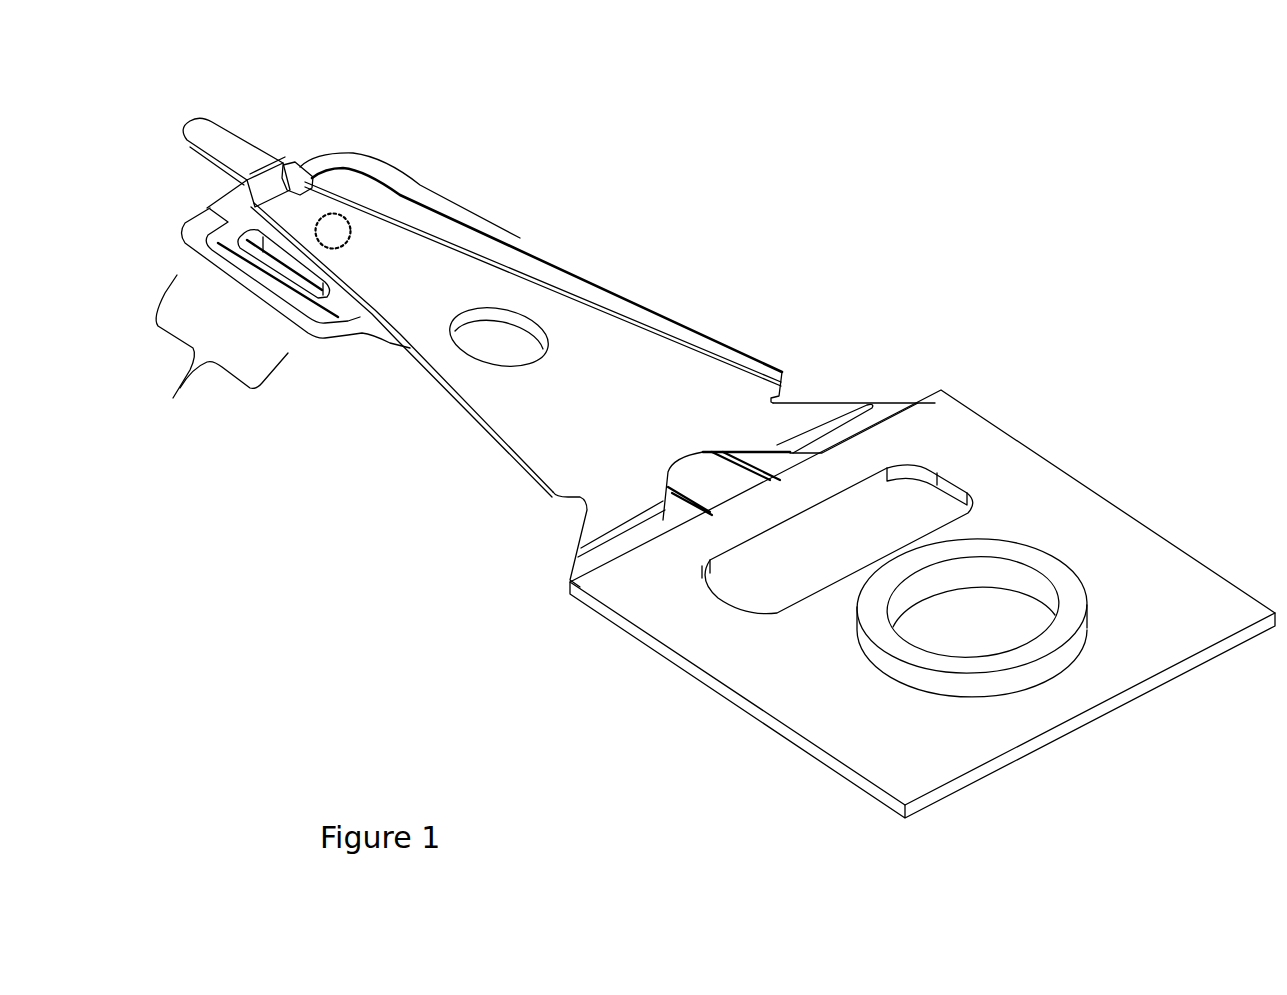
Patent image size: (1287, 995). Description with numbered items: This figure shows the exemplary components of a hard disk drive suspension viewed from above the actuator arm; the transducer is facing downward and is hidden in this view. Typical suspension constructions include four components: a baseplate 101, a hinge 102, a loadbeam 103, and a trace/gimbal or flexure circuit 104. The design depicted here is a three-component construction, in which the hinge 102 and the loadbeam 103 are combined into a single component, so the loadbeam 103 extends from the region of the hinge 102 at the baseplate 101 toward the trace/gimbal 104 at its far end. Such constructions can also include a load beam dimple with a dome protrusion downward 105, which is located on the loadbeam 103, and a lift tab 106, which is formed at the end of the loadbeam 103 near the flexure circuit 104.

The base plate 101 is at (1003, 492).
The mounting bracket 102 is at (803, 418).
The spring arm 103 is at (577, 373).
The clip 104 is at (176, 396).
The contact point 105 is at (338, 225).
The tab 106 is at (236, 145).